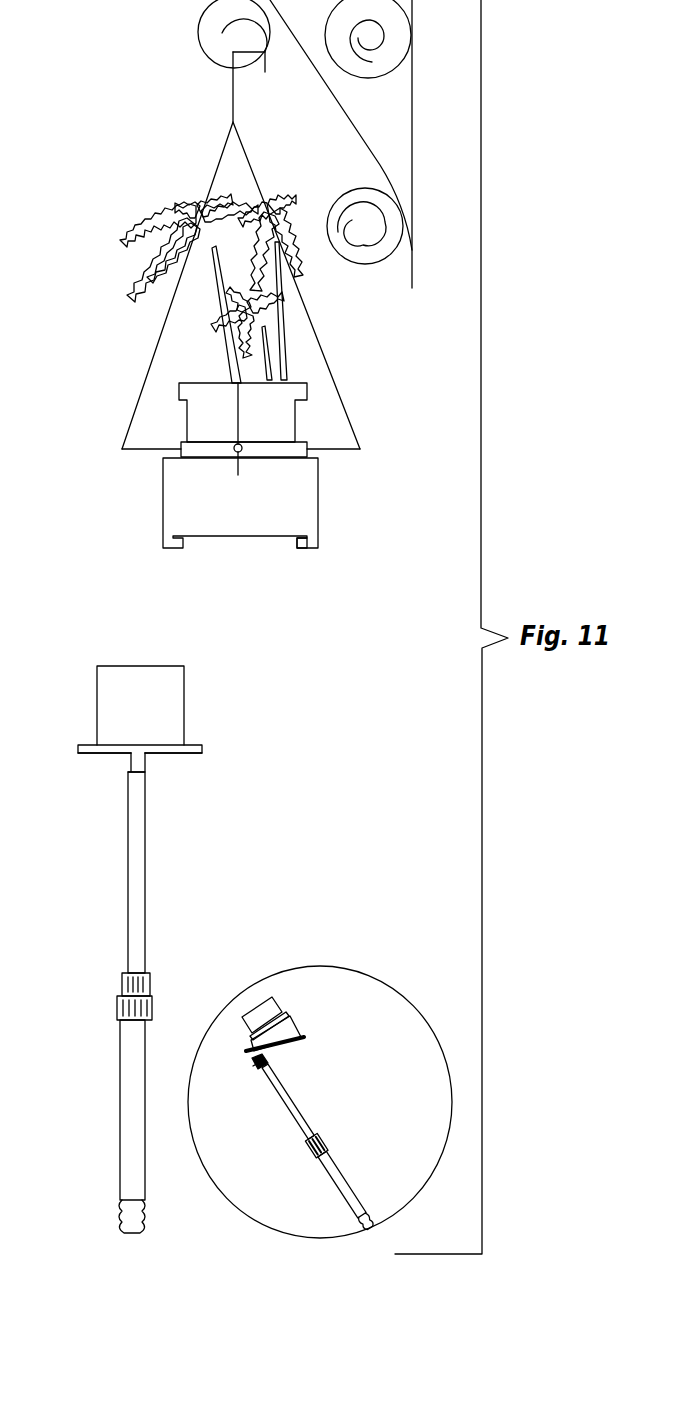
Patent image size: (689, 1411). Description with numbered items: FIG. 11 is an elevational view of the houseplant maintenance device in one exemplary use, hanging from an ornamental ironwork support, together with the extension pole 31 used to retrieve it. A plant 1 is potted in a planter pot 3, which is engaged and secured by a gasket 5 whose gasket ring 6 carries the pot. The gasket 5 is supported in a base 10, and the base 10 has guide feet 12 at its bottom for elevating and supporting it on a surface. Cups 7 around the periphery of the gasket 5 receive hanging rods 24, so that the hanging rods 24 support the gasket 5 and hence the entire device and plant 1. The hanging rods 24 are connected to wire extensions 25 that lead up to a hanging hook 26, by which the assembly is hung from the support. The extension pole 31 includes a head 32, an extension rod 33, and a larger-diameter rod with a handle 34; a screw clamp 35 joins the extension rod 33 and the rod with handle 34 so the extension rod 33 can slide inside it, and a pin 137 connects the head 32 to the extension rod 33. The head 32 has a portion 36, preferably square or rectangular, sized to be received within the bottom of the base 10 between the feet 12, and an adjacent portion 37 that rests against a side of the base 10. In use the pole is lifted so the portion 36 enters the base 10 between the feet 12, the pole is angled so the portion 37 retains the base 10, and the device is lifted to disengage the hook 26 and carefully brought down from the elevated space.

The plant 1 is at (150, 219).
The planter pot 3 is at (282, 417).
The gasket 5 is at (297, 452).
The gasket ring 6 is at (282, 1013).
The cups 7 is at (246, 446).
The base 10 is at (312, 495).
The guide feet 12 is at (303, 550).
The hanging rods 24 is at (143, 450).
The wire extensions 25 is at (165, 327).
The hanging hook 26 is at (236, 97).
The extension pole 31 is at (232, 853).
The head 32 is at (172, 753).
The extension rod 33 is at (138, 878).
The rod with handle 34 is at (135, 1173).
The screw clamp 35 is at (150, 983).
The portion of head received within base 36 is at (185, 745).
The portion of head engaging base side 37 is at (102, 702).
The pin 137 is at (147, 778).